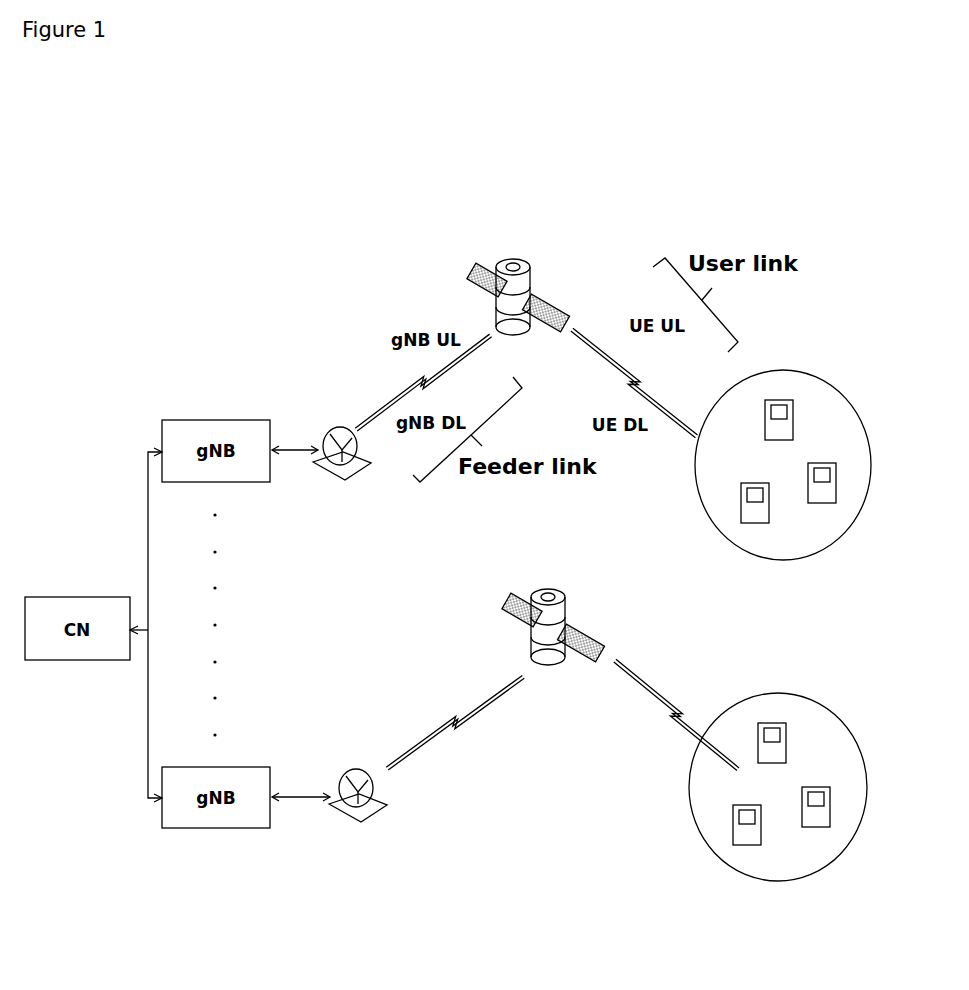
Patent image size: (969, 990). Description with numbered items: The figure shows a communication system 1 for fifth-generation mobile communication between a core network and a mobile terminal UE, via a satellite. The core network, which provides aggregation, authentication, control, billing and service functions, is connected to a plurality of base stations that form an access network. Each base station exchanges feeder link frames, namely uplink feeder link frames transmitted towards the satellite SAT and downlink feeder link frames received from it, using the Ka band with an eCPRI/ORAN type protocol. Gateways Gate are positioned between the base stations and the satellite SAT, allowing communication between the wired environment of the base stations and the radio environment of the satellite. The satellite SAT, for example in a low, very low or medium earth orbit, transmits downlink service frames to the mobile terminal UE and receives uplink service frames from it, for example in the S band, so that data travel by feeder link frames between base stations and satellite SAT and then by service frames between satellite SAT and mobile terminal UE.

The communication system 1 is at (505, 225).
The satellite SAT is at (556, 405).
The gateway Gate is at (349, 415).
The mobile terminal UE is at (803, 413).